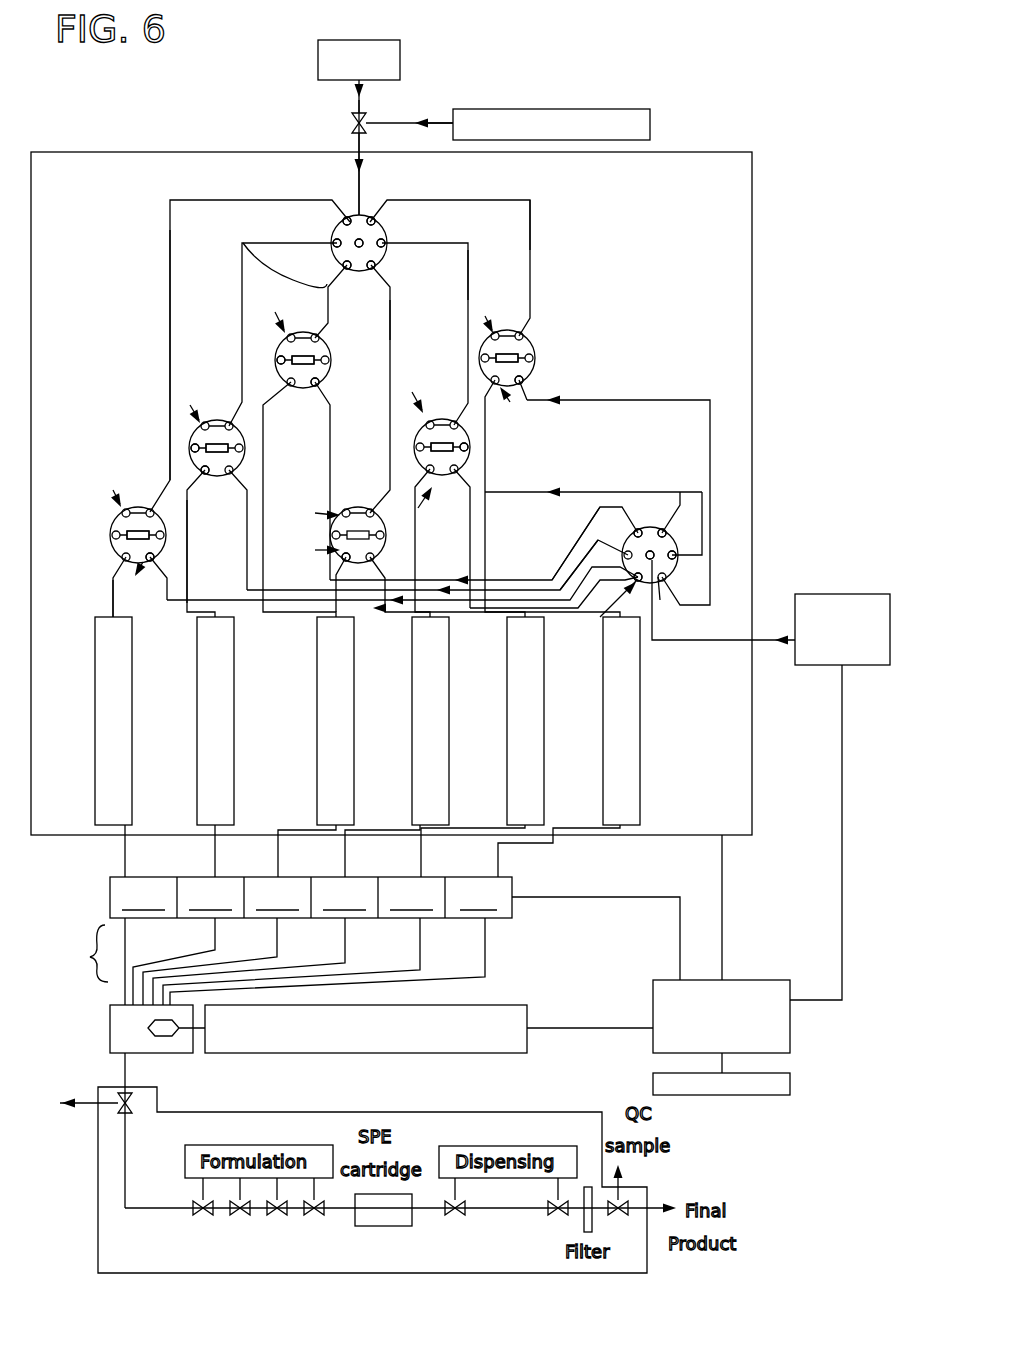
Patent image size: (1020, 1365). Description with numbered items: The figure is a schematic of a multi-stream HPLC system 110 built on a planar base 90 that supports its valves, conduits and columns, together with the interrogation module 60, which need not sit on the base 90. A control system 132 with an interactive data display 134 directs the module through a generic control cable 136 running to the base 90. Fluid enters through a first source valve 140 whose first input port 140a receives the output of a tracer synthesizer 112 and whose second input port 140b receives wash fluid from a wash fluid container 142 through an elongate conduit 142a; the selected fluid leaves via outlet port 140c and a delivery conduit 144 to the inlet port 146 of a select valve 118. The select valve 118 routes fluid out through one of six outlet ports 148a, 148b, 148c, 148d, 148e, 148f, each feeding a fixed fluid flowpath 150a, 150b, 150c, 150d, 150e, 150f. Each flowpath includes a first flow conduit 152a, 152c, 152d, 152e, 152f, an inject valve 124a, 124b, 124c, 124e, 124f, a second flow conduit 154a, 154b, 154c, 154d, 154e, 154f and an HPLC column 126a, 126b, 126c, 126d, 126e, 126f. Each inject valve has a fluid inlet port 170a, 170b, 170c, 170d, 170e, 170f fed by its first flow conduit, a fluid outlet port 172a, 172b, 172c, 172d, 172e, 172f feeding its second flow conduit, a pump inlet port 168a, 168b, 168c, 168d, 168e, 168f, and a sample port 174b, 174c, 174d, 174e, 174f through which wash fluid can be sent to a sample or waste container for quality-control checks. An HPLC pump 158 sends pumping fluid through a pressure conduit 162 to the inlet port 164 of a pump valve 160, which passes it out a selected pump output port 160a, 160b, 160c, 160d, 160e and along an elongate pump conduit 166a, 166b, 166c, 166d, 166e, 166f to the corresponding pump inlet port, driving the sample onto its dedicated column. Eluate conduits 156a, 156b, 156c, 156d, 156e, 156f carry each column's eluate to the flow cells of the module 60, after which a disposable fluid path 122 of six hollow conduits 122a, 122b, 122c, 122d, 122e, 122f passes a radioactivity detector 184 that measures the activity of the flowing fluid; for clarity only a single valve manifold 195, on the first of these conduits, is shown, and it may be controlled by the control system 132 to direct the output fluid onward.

The planar base 90 is at (753, 202).
The multi-stream HPLC system 110 is at (240, 128).
The tracer synthesizer 112 is at (359, 127).
The select valve 118 is at (392, 243).
The first source valve 140 is at (333, 122).
The first input port 140a is at (352, 117).
The second input port 140b is at (365, 119).
The outlet port 140c is at (352, 128).
The wash fluid container 142 is at (602, 109).
The elongate conduit 142a is at (443, 124).
The delivery conduit 144 is at (365, 165).
The inlet port 146 is at (366, 252).
The outlet port 148a is at (345, 216).
The outlet port 148b is at (334, 243).
The outlet port 148c is at (343, 263).
The outlet port 148d is at (363, 287).
The outlet port 148e is at (384, 246).
The outlet port 148f is at (377, 223).
The fixed fluid flowpath 150a is at (170, 200).
The fixed fluid flowpath 150b is at (242, 250).
The fixed fluid flowpath 150c is at (267, 320).
The fixed fluid flowpath 150d is at (423, 320).
The fixed fluid flowpath 150e is at (470, 243).
The fixed fluid flowpath 150f is at (480, 184).
The first flow conduit 152a is at (170, 233).
The first flow conduit 152c is at (320, 298).
The first flow conduit 152d is at (395, 340).
The first flow conduit 152e is at (470, 258).
The first flow conduit 152f is at (532, 196).
The fluid inlet port 170a is at (139, 500).
The fluid inlet port 170b is at (212, 418).
The fluid inlet port 170c is at (325, 353).
The fluid inlet port 170d is at (380, 562).
The fluid inlet port 170e is at (438, 420).
The fluid inlet port 170f is at (536, 348).
The fluid outlet port 172a is at (126, 558).
The fluid outlet port 172b is at (195, 460).
The fluid outlet port 172c is at (292, 392).
The fluid outlet port 172d is at (305, 545).
The fluid outlet port 172e is at (445, 513).
The fluid outlet port 172f is at (512, 404).
The sample port 174b is at (198, 418).
The sample port 174c is at (118, 513).
The sample port 174d is at (305, 509).
The sample port 174e is at (275, 333).
The sample port 174f is at (502, 330).
The inject valve 124a is at (116, 535).
The inject valve 124b is at (193, 446).
The inject valve 124c is at (320, 447).
The inject valve 124e is at (447, 478).
The inject valve 124f is at (536, 358).
The pump inlet port 168a is at (151, 568).
The pump inlet port 168b is at (215, 490).
The pump inlet port 168c is at (322, 388).
The pump inlet port 168d is at (363, 507).
The pump inlet port 168e is at (472, 447).
The pump inlet port 168f is at (522, 380).
The second flow conduit 154a is at (113, 600).
The second flow conduit 154b is at (190, 590).
The second flow conduit 154c is at (439, 574).
The second flow conduit 154d is at (437, 590).
The second flow conduit 154e is at (402, 604).
The second flow conduit 154f is at (487, 492).
The pump conduit 166a is at (653, 600).
The pump conduit 166b is at (552, 575).
The pump conduit 166c is at (530, 580).
The pump conduit 166d is at (566, 531).
The pump conduit 166e is at (614, 492).
The pump conduit 166f is at (660, 400).
The pump valve 160 is at (618, 562).
The pump output port 160a is at (635, 590).
The pump output port 160b is at (598, 540).
The pump output port 160c is at (650, 528).
The pump output port 160d is at (668, 533).
The pump output port 160e is at (680, 557).
The pressure conduit 162 is at (658, 650).
The inlet port 164 is at (660, 600).
The HPLC pump 158 is at (842, 593).
The HPLC column 126a is at (96, 660).
The HPLC column 126b is at (198, 672).
The HPLC column 126c is at (318, 672).
The HPLC column 126d is at (413, 672).
The HPLC column 126e is at (508, 672).
The HPLC column 126f is at (604, 672).
The eluate conduit 156a is at (118, 856).
The eluate conduit 156b is at (208, 856).
The eluate conduit 156c is at (274, 852).
The eluate conduit 156d is at (348, 852).
The eluate conduit 156e is at (428, 856).
The eluate conduit 156f is at (505, 856).
The interrogation module 60 is at (514, 910).
The disposable fluid path 122 is at (76, 953).
The hollow conduit 122a is at (125, 950).
The hollow conduit 122b is at (212, 950).
The hollow conduit 122c is at (276, 955).
The hollow conduit 122d is at (344, 960).
The hollow conduit 122e is at (418, 965).
The hollow conduit 122f is at (485, 972).
The radioactivity detector 184 is at (362, 1054).
The control system 132 is at (792, 1028).
The interactive data display 134 is at (722, 1096).
The control cable 136 is at (724, 880).
The valve manifold 195 is at (190, 1112).